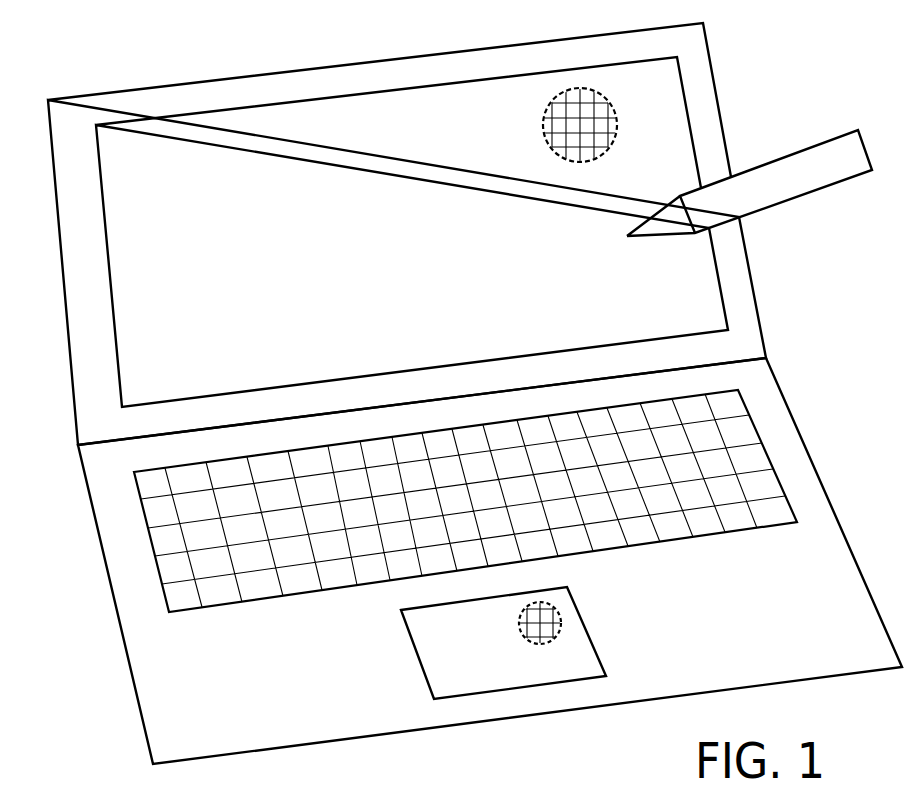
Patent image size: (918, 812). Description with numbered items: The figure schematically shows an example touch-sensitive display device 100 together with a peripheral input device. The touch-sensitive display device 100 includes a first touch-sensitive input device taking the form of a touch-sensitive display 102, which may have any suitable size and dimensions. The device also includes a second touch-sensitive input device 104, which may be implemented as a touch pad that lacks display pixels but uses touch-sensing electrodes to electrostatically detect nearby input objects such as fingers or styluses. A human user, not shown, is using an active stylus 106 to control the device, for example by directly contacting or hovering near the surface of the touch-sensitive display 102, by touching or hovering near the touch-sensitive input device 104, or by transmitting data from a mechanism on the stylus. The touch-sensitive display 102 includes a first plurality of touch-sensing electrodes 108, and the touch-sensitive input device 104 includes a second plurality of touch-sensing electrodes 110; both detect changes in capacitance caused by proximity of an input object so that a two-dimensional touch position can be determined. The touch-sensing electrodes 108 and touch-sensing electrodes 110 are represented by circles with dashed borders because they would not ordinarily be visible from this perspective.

The touch-sensitive display device 100 is at (93, 92).
The touch-sensitive display 102 is at (133, 125).
The touch-sensitive input device 104 is at (412, 640).
The active stylus 106 is at (697, 192).
The touch-sensing electrodes 108 is at (547, 109).
The touch-sensing electrodes 110 is at (519, 620).